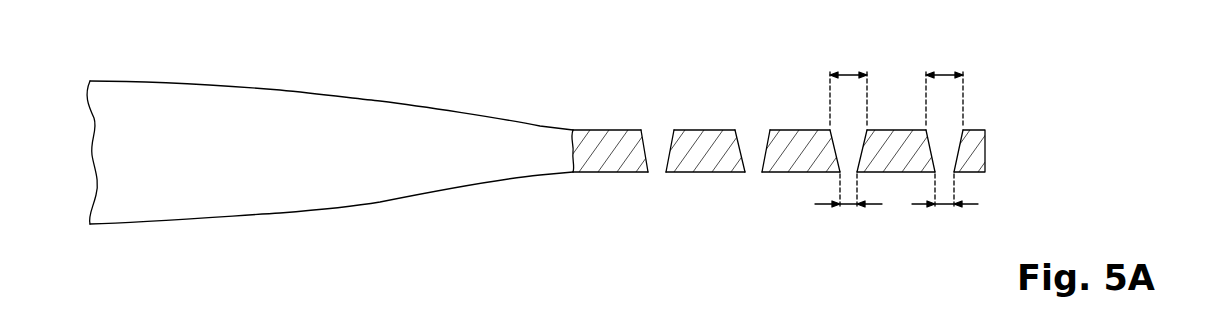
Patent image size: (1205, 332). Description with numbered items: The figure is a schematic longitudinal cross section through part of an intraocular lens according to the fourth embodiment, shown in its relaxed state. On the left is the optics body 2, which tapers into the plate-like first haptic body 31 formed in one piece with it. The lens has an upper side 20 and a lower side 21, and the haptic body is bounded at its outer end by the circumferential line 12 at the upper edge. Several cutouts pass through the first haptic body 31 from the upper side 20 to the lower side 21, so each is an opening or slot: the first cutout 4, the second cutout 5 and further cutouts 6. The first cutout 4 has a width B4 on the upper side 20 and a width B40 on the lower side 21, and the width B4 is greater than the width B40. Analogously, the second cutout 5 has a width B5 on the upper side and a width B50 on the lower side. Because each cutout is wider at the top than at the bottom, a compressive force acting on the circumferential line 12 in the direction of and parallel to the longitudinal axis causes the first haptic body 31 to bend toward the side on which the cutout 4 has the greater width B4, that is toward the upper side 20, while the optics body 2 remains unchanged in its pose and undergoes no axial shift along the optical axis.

The optics body 2 is at (340, 97).
The first haptic body 31 is at (806, 126).
The upper side 20 is at (598, 130).
The lower side 21 is at (598, 174).
The further cutouts 6 is at (753, 140).
The second cutout 5 is at (843, 147).
The first cutout 4 is at (940, 147).
The circumferential line 12 is at (986, 150).
The width of second cutout on upper side B5 is at (848, 84).
The width of first cutout on upper side B4 is at (944, 84).
The width of second cutout on lower side B50 is at (848, 211).
The width of first cutout on lower side B40 is at (945, 211).